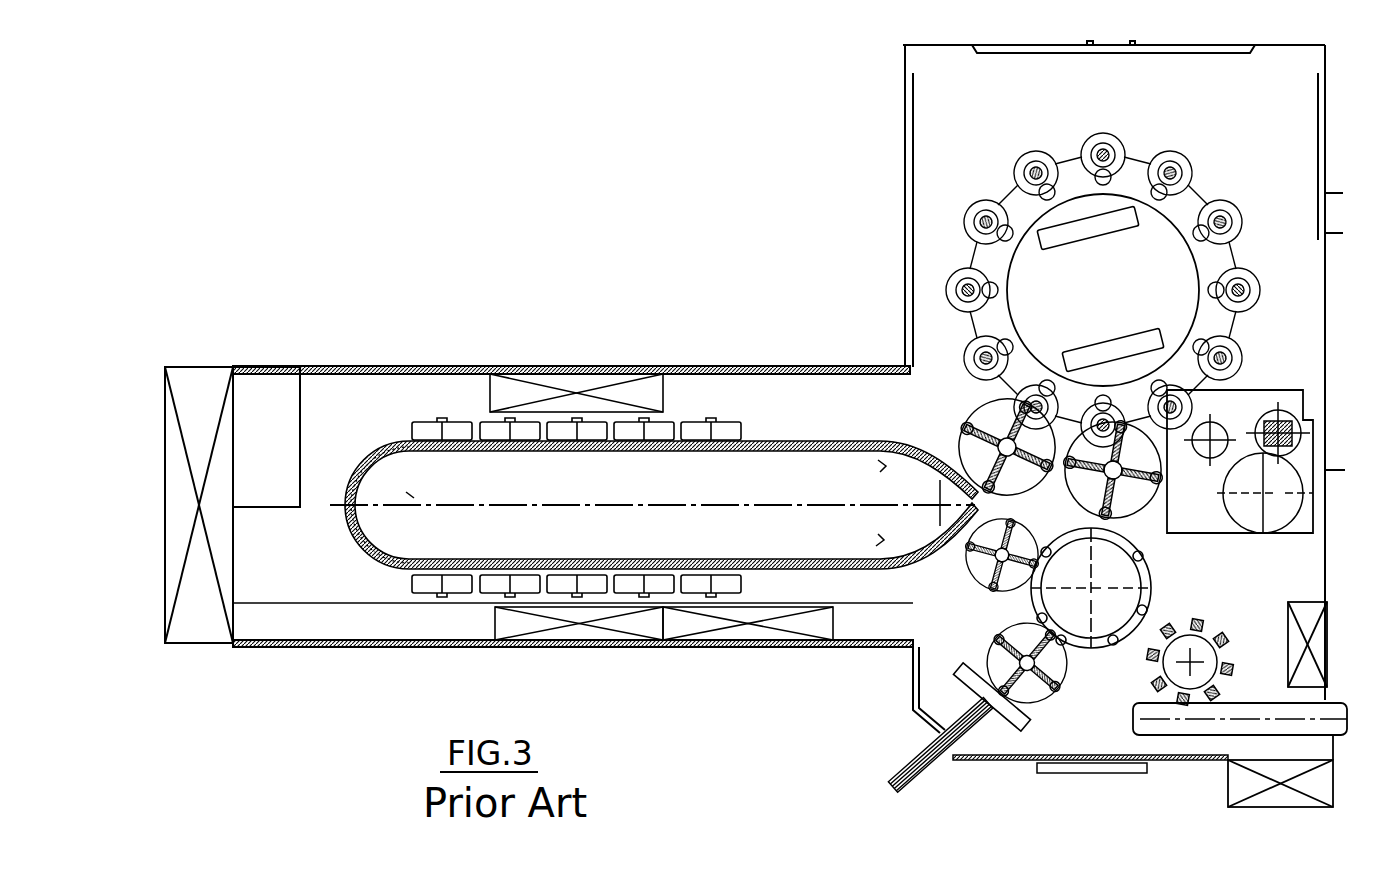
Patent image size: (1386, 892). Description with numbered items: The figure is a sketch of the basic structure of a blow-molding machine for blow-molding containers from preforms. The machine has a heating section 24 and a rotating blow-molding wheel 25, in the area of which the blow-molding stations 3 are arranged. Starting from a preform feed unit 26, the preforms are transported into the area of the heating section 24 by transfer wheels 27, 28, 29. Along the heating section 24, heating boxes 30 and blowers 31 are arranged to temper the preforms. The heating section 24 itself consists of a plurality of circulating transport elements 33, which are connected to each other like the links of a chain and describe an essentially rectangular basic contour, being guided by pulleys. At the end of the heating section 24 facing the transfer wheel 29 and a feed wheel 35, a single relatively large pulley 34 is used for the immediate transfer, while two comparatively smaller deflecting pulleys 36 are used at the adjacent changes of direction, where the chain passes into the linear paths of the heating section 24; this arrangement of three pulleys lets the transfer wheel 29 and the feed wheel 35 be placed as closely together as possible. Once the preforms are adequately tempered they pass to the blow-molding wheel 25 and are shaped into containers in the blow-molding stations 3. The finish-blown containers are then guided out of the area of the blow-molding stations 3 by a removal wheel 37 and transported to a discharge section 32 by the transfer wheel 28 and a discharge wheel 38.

The blow-molding station 3 is at (962, 268).
The heating section 24 is at (700, 403).
The blow-molding wheel 25 is at (1035, 212).
The preform feed unit 26 is at (950, 758).
The transfer wheel 27 is at (1040, 700).
The transfer wheel 28 is at (1092, 650).
The transfer wheel 29 is at (980, 585).
The heating box 30 is at (458, 422).
The blower 31 is at (570, 385).
The discharge section 32 is at (1340, 728).
The transport element 33 is at (385, 566).
The pulley 34 is at (411, 497).
The feed wheel 35 is at (1000, 398).
The deflecting pulley 36 is at (842, 440).
The removal wheel 37 is at (1165, 495).
The discharge wheel 38 is at (1200, 672).